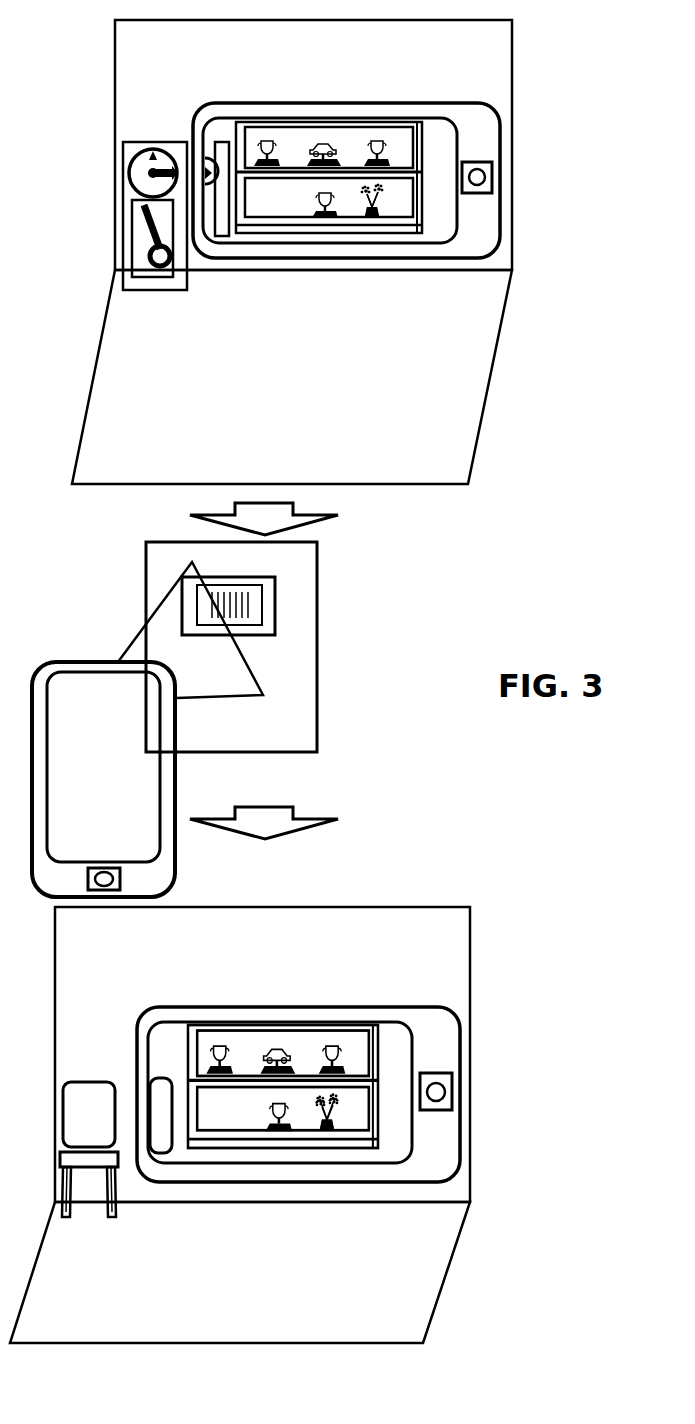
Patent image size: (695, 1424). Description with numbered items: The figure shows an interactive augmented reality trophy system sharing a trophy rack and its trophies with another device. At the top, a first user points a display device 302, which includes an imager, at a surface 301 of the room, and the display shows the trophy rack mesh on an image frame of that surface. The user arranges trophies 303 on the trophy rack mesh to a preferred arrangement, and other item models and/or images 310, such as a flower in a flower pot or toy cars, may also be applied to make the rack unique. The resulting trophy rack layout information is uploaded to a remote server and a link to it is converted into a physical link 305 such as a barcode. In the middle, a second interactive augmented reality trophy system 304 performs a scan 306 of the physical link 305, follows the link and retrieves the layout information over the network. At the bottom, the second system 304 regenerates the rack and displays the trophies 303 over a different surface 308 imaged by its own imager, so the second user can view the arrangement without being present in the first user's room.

The surface 301 is at (348, 73).
The display device 302 is at (447, 112).
The trophies 303 is at (270, 120).
The second interactive augmented reality trophy system 304 is at (32, 662).
The physical link 305 is at (140, 557).
The scan 306 is at (118, 638).
The different surface 308 is at (268, 966).
The other item models and/or images 310 is at (372, 216).